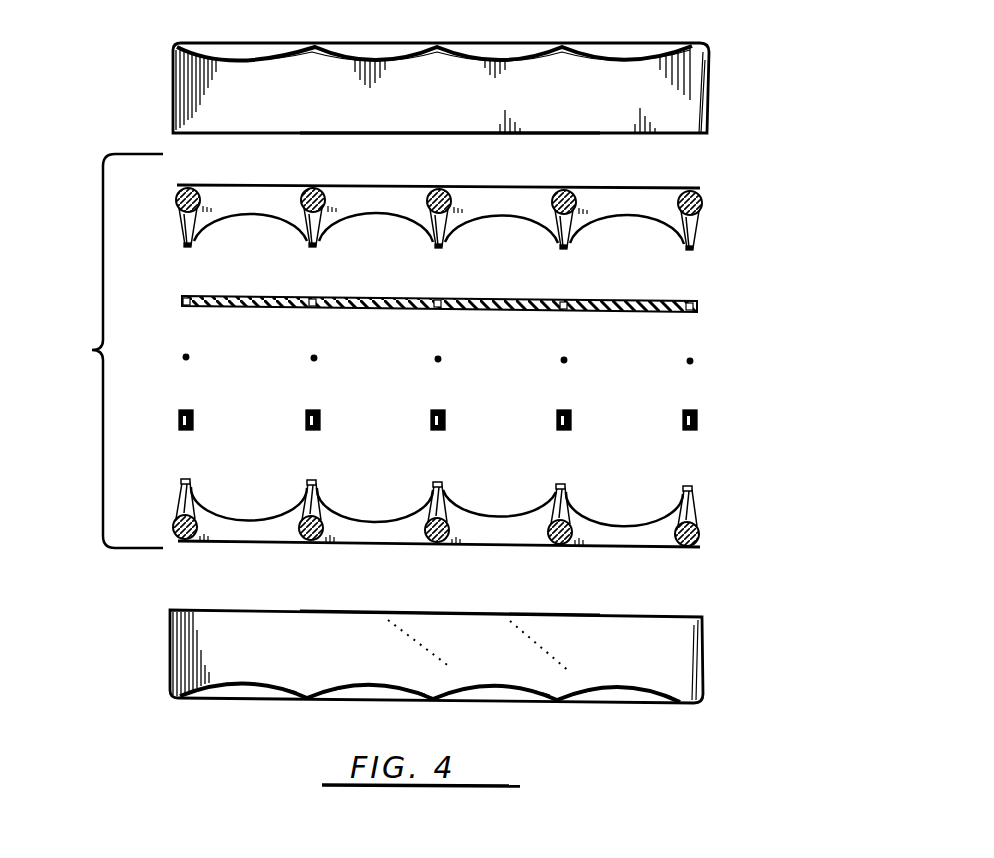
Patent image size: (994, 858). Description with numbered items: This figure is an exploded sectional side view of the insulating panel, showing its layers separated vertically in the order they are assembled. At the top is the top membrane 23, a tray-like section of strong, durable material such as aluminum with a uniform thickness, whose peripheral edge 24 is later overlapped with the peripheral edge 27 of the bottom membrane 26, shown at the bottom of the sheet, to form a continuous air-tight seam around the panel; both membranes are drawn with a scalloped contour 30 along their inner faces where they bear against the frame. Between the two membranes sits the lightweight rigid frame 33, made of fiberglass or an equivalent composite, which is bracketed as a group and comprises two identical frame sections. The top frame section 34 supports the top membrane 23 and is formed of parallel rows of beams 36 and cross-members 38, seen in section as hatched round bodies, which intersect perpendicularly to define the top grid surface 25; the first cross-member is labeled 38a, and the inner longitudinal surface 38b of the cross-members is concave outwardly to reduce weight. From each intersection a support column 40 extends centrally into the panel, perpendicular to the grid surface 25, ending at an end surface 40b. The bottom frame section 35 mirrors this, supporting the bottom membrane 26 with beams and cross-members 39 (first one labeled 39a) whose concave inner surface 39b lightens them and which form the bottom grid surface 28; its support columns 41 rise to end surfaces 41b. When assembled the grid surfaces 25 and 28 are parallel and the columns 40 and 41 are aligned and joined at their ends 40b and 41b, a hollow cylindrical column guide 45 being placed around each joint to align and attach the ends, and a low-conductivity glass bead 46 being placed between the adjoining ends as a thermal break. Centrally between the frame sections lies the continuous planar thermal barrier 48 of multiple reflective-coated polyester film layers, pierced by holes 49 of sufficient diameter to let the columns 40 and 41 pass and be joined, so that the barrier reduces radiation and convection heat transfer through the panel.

The top membrane section 23 is at (720, 95).
The scalloped edge 30 is at (253, 53).
The peripheral edge of top membrane 24 is at (623, 136).
The rigid frame 33 is at (90, 350).
The top frame section 34 is at (476, 211).
The top grid surface 25 is at (400, 180).
The first bulbous rib 38a is at (297, 185).
The cross-members of top frame section 38 is at (463, 197).
The beams of top frame section 36 is at (565, 191).
The inner longitudinal surface of cross-members 38b is at (342, 213).
The support column of top frame section 40 is at (696, 233).
The end surface of top support column 40b is at (692, 250).
The thermal barrier 48 is at (720, 307).
The holes in thermal barrier 49 is at (183, 297).
The bead 46 is at (690, 362).
The column guide 45 is at (698, 421).
The bottom frame section 35 is at (503, 530).
The bottom grid surface 28 is at (403, 555).
The first lower bulbous rib 39a is at (287, 543).
The cross-members of bottom frame section 39 is at (482, 536).
The inner longitudinal surface of bottom cross-members 39b is at (333, 507).
The support column of bottom frame section 41 is at (694, 519).
The end surface of bottom support column 41b is at (690, 488).
The bottom membrane section 26 is at (676, 720).
The peripheral edge of bottom membrane 27 is at (582, 614).